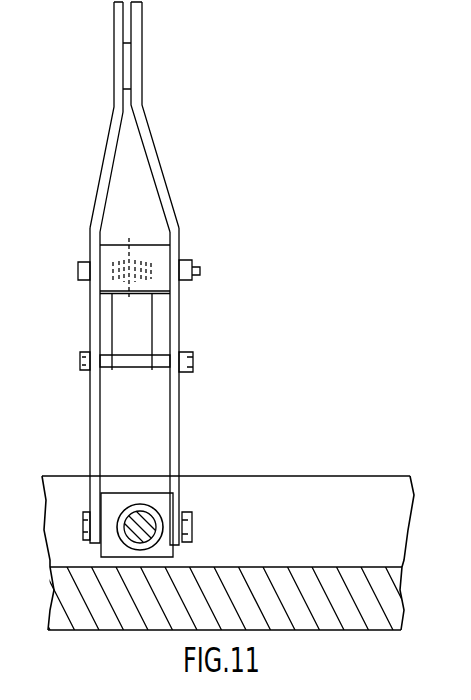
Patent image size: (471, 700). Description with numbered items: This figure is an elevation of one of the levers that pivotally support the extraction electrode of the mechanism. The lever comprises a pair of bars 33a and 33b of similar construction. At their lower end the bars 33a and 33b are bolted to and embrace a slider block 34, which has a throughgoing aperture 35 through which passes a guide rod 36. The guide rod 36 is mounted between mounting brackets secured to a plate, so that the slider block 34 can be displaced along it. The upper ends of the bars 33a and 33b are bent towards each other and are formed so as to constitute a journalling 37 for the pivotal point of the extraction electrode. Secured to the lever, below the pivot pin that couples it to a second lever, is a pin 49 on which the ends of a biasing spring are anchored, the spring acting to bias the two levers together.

The journalling 37 is at (128, 65).
The bar 33a is at (90, 398).
The bar 33b is at (179, 410).
The pin 49 is at (133, 370).
The slider block 34 is at (110, 505).
The throughgoing aperture 35 is at (152, 510).
The guide rod 36 is at (125, 527).